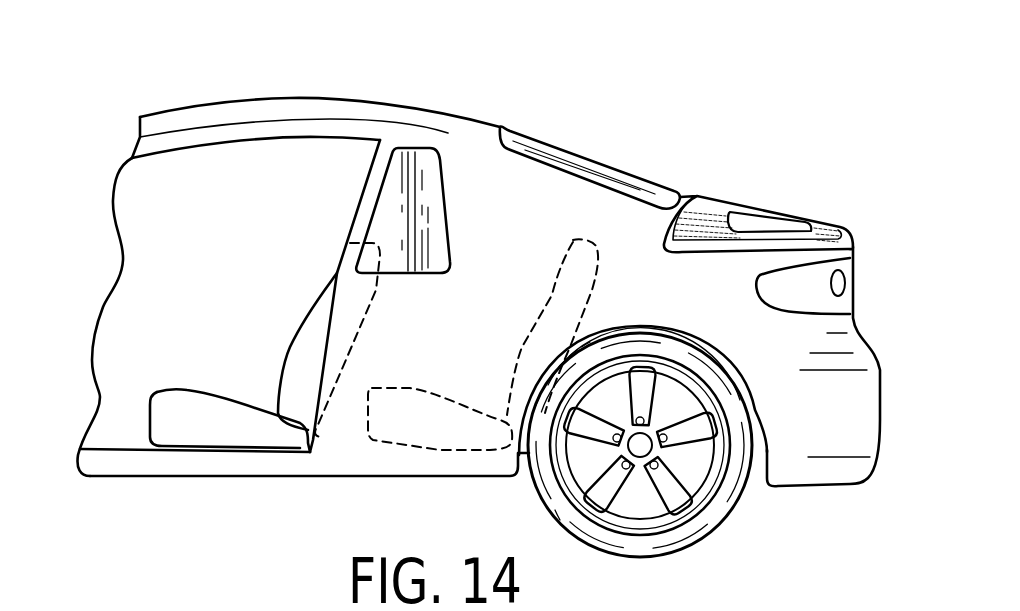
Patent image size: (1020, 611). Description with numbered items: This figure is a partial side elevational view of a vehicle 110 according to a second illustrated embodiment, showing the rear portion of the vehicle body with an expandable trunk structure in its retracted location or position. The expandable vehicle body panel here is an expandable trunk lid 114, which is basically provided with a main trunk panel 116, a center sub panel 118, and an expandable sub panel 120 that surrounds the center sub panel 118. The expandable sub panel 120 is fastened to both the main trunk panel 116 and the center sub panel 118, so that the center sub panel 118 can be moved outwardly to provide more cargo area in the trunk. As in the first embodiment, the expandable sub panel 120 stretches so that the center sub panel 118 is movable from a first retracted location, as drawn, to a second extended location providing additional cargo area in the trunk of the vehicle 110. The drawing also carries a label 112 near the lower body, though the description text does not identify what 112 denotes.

The vehicle 110 is at (157, 93).
The rear seat 112 is at (456, 369).
The expandable trunk lid 114 is at (893, 107).
The main trunk panel 116 is at (702, 199).
The center sub panel 118 is at (772, 214).
The expandable sub panel 120 is at (834, 222).